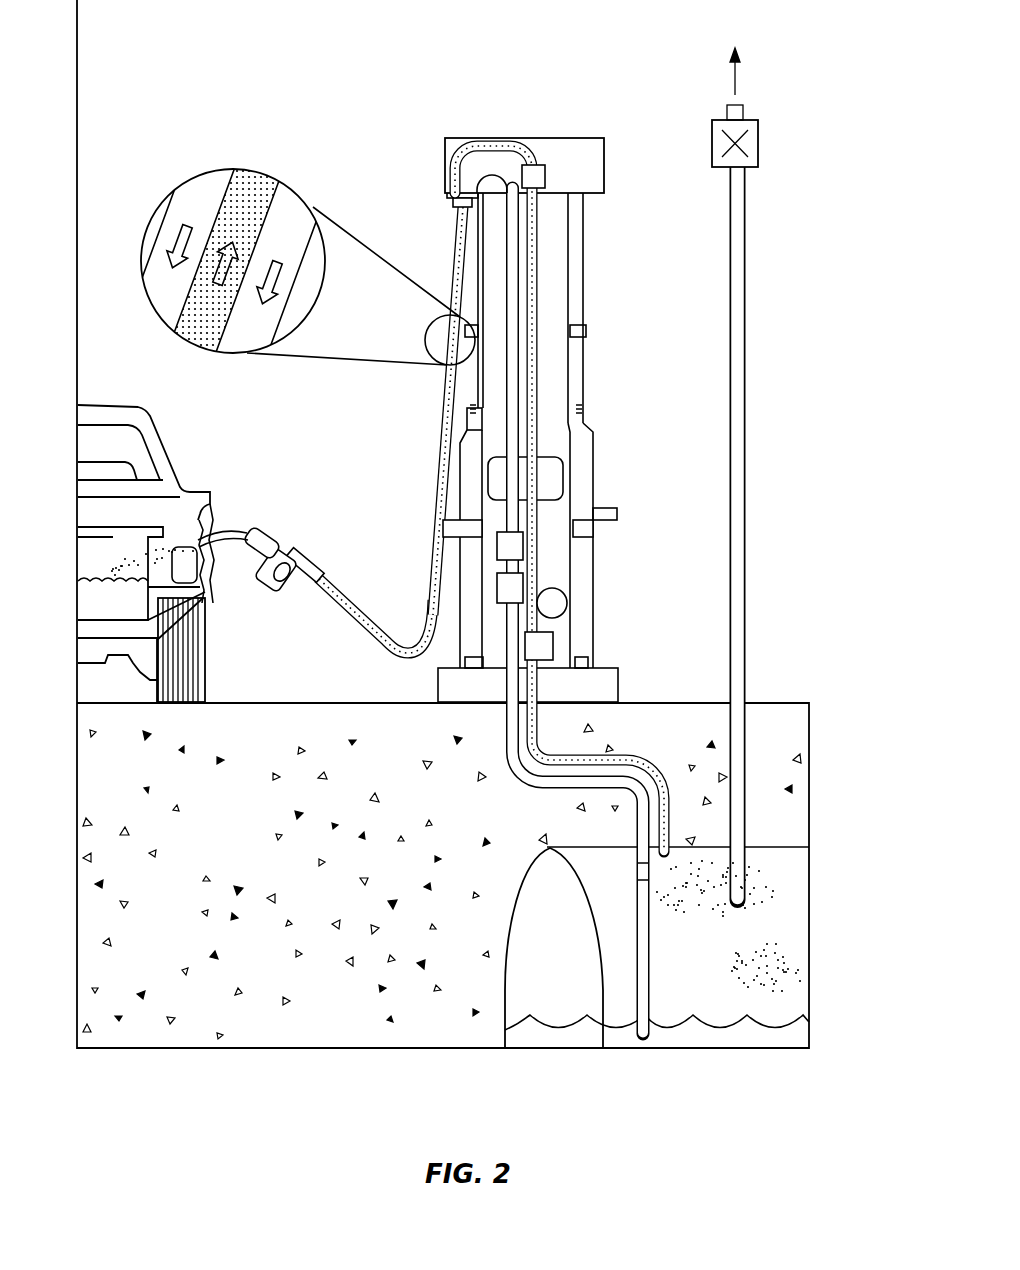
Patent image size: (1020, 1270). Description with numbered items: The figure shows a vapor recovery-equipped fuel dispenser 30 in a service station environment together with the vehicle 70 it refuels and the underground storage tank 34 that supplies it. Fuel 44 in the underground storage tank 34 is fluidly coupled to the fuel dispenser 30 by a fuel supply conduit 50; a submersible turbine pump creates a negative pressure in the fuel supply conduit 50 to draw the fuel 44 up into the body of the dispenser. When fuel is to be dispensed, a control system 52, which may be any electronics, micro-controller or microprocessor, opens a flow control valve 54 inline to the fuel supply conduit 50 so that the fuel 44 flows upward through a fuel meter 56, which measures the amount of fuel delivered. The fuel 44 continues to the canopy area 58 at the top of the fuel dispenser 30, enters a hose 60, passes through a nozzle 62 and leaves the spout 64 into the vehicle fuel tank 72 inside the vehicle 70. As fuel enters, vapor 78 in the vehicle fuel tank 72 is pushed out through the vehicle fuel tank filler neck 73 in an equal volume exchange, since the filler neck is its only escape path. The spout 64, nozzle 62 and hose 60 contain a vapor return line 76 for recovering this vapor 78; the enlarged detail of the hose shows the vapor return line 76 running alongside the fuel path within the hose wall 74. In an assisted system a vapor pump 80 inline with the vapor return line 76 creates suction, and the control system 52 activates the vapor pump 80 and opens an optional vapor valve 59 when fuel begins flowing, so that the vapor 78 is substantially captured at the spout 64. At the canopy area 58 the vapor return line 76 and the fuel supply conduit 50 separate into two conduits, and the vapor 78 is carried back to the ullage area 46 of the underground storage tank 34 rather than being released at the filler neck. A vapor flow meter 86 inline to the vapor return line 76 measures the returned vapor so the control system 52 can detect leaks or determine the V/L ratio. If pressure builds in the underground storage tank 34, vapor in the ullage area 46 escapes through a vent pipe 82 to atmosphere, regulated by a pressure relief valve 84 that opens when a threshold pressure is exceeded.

The fuel dispenser 30 is at (531, 115).
The underground storage tank 34 is at (710, 958).
The fuel 44 is at (792, 1035).
The ullage area 46 is at (793, 888).
The fuel supply conduit 50 is at (507, 655).
The control system 52 is at (552, 458).
The flow control valve 54 is at (515, 573).
The fuel meter 56 is at (515, 530).
The canopy area 58 is at (510, 138).
The vapor valve 59 is at (538, 153).
The hose 60 is at (163, 205).
The nozzle 62 is at (277, 537).
The spout 64 is at (220, 532).
The vehicle 70 is at (121, 448).
The vehicle fuel tank 72 is at (124, 611).
The vehicle fuel tank filler neck 73 is at (203, 540).
The hose outer wall 74 is at (210, 193).
The vapor return line 76 is at (277, 207).
The vapor 78 is at (170, 540).
The vapor pump 80 is at (560, 590).
The vent pipe 82 is at (746, 293).
The pressure relief valve 84 is at (758, 130).
The vapor flow meter 86 is at (553, 647).